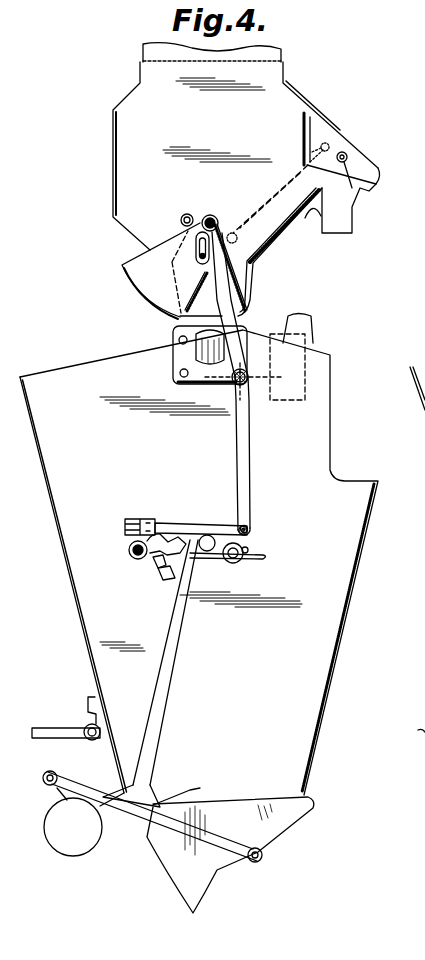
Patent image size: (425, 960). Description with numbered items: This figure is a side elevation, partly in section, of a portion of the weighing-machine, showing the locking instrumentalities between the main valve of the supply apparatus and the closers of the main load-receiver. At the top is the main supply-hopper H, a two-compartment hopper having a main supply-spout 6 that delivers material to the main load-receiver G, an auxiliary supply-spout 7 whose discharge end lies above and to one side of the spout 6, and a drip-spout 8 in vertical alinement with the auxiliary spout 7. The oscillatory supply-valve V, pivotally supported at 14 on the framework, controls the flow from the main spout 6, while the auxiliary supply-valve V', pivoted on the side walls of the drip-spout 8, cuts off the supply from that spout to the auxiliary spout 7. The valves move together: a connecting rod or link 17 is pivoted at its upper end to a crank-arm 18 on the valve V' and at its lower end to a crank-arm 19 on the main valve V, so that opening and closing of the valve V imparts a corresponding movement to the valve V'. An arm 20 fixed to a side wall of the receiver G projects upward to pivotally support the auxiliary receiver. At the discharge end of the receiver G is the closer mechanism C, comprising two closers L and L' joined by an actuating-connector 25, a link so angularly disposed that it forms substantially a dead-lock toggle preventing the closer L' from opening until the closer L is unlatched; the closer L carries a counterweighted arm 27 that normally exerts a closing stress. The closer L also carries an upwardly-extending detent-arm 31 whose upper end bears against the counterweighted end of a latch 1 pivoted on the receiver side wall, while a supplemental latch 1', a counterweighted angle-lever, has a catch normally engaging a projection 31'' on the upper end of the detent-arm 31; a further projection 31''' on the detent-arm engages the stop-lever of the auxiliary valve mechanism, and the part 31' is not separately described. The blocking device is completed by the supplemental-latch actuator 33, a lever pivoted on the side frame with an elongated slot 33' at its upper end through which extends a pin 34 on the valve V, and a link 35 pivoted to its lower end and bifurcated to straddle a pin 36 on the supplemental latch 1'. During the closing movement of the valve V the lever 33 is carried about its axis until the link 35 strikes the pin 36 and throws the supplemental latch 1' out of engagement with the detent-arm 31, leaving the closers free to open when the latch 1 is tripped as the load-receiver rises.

The main supply-hopper H is at (245, 146).
The auxiliary supply-valve V' is at (354, 152).
The crank-arm 18 is at (344, 152).
The drip-spout 8 is at (318, 135).
The connecting rod or link 17 is at (285, 187).
The crank-arm 19 is at (233, 233).
The auxiliary supply-spout 7 is at (342, 220).
The main supply-spout 6 is at (246, 282).
The supply-valve V is at (149, 266).
The pivot of supply-valve 14 is at (211, 216).
The pin 34 is at (198, 262).
The elongated slot 33' is at (202, 267).
The supplemental-latch actuator 33 is at (245, 383).
The arm 20 is at (312, 323).
The main load-receiver G is at (76, 578).
The supplemental latch 1' is at (201, 513).
The pin 36 is at (125, 528).
The link 35 is at (223, 525).
The pawl 31' is at (181, 526).
The projection 31'' is at (132, 570).
The projection 31''' is at (141, 588).
The latch 1 is at (228, 559).
The detent-arm 31 is at (153, 673).
The closer L is at (150, 816).
The closer L' is at (271, 847).
The actuating-connector 25 is at (168, 823).
The counterweighted arm 27 is at (84, 822).
The closer mechanism C is at (230, 855).